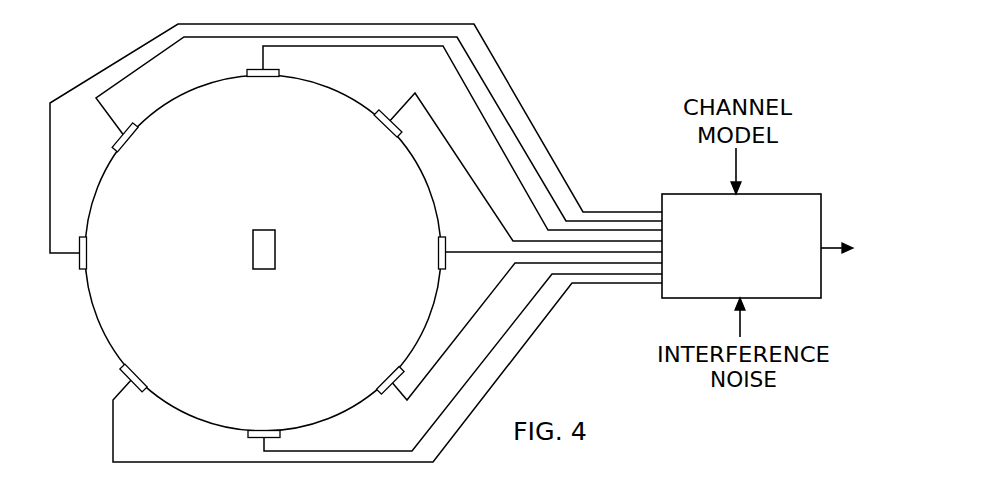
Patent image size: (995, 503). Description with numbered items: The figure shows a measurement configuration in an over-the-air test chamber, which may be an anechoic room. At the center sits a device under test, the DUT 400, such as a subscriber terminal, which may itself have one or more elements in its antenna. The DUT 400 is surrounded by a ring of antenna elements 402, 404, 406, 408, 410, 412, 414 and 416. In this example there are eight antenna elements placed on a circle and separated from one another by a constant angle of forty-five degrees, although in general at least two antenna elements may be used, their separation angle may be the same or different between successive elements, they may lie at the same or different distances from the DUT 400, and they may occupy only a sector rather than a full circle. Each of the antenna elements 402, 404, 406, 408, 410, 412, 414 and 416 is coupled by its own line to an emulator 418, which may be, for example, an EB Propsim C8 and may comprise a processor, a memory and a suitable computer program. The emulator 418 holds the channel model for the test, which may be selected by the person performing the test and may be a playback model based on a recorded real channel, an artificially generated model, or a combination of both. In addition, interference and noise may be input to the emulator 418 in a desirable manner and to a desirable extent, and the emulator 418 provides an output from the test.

The DUT 400 is at (267, 230).
The antenna element 402 is at (438, 255).
The antenna element 404 is at (377, 123).
The antenna element 406 is at (255, 77).
The antenna element 408 is at (122, 142).
The antenna element 410 is at (92, 247).
The antenna element 412 is at (135, 375).
The antenna element 414 is at (257, 430).
The antenna element 416 is at (383, 380).
The emulator 418 is at (790, 193).